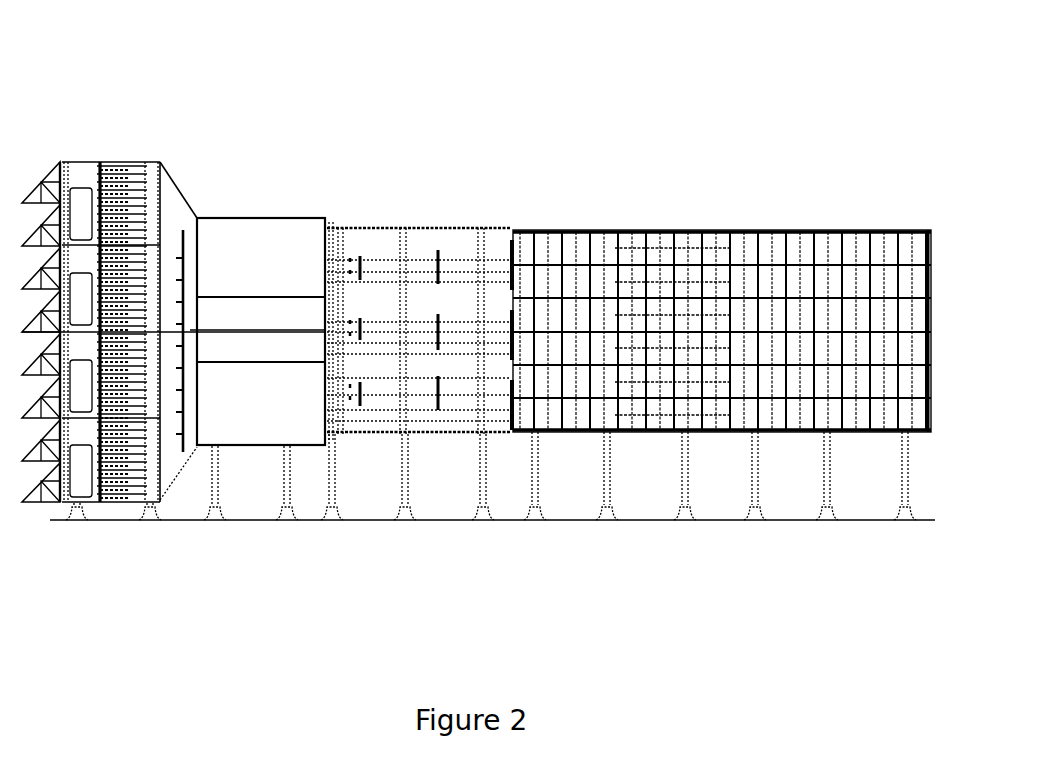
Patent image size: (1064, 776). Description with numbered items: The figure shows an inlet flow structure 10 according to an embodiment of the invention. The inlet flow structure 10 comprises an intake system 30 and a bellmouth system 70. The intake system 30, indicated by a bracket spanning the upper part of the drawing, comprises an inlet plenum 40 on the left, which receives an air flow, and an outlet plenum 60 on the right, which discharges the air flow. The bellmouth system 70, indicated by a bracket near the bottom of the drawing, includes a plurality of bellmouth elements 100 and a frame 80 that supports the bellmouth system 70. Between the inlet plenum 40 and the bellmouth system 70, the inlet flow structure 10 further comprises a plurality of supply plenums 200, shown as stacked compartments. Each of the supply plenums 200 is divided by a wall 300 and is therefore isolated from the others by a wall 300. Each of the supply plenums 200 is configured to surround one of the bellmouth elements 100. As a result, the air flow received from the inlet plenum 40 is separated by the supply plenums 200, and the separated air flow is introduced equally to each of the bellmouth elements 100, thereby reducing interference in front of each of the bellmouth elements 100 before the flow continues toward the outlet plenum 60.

The inlet flow structure 10 is at (64, 49).
The intake system 30 is at (197, 100).
The inlet plenum 40 is at (174, 156).
The outlet plenum 60 is at (552, 221).
The bellmouth system 70 is at (348, 590).
The frame 80 is at (476, 438).
The bellmouth elements 100 is at (339, 263).
The supply plenums 200 is at (278, 395).
The wall 300 is at (213, 300).